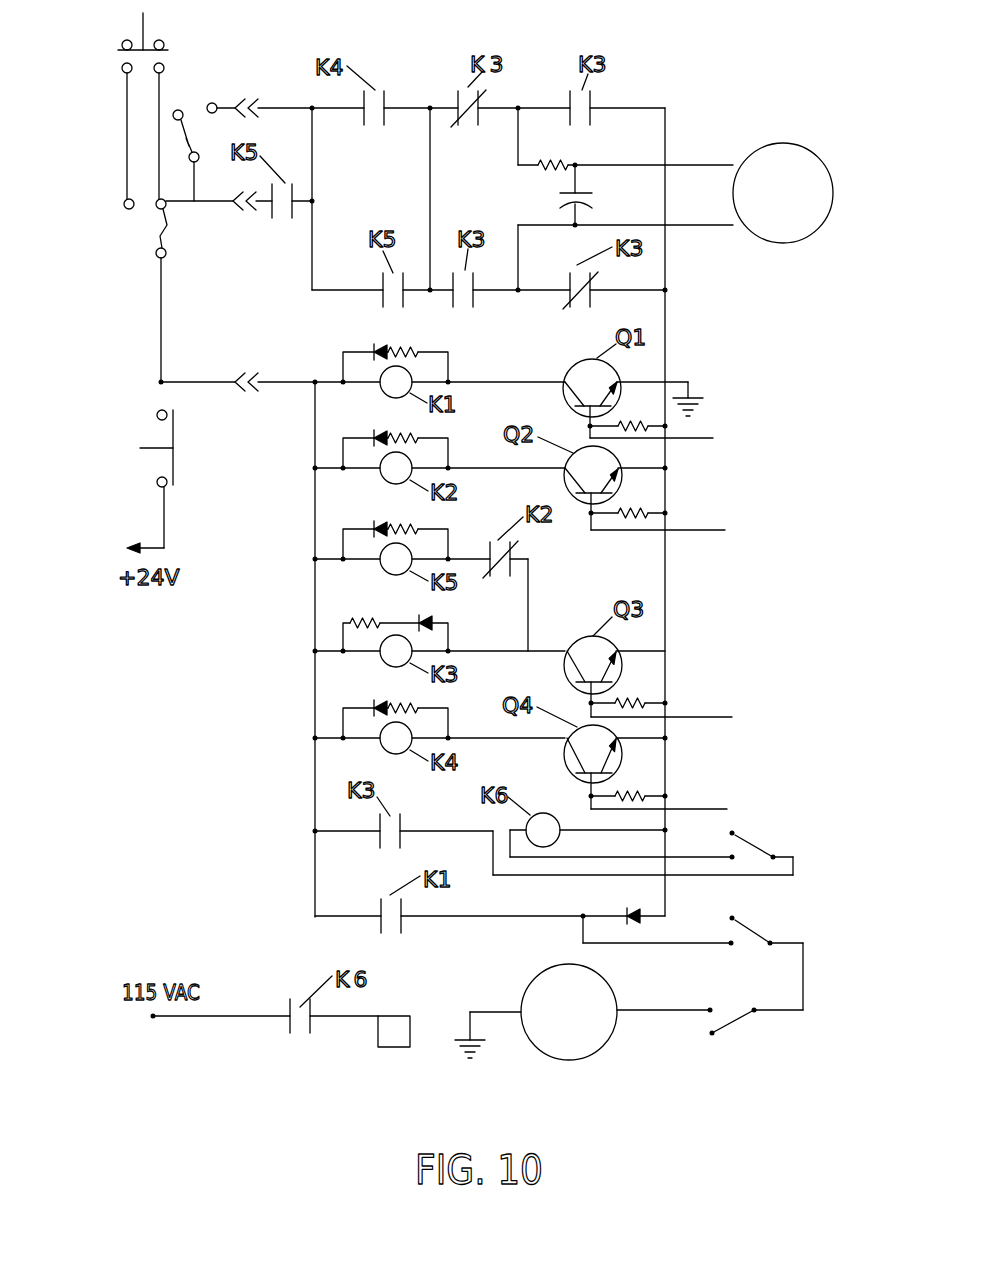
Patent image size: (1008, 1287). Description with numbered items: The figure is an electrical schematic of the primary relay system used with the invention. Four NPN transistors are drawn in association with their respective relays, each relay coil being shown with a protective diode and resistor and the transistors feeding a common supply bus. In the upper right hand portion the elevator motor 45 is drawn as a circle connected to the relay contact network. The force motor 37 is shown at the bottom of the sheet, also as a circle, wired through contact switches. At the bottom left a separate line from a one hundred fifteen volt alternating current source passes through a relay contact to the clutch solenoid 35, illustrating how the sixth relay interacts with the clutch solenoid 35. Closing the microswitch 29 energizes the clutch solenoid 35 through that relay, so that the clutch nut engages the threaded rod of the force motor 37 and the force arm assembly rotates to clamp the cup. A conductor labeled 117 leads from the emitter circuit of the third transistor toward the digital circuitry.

The elevator motor 45 is at (822, 158).
The inverter 117 is at (692, 717).
The microswitch 29 is at (745, 832).
The force motor 37 is at (605, 1043).
The clutch solenoid 35 is at (392, 1048).